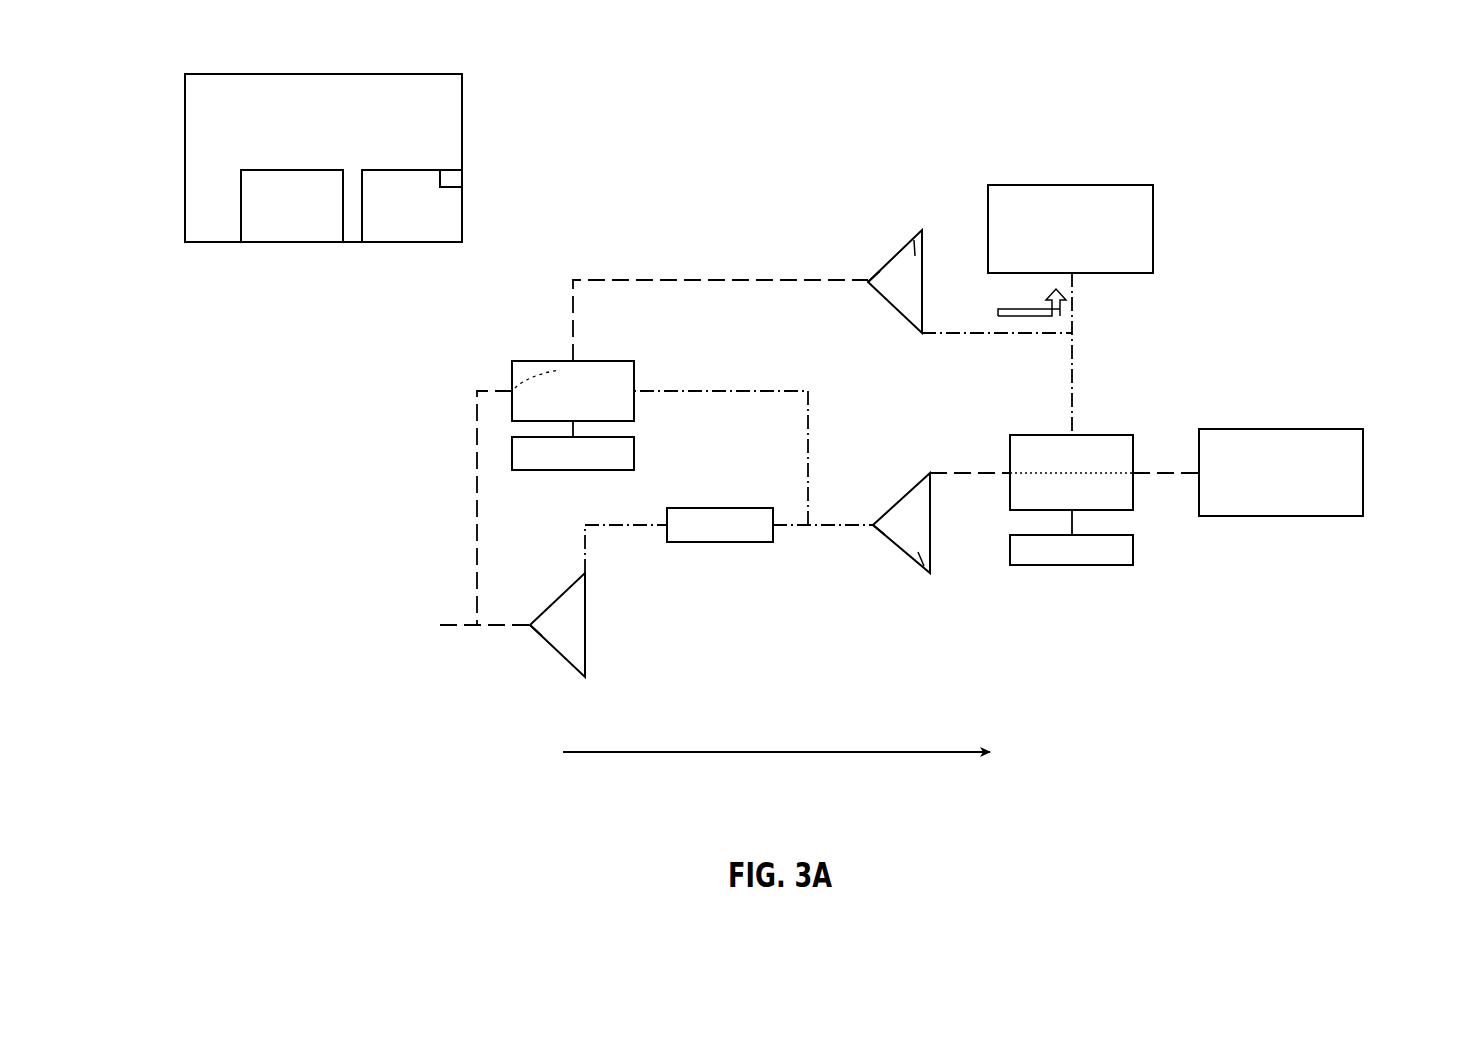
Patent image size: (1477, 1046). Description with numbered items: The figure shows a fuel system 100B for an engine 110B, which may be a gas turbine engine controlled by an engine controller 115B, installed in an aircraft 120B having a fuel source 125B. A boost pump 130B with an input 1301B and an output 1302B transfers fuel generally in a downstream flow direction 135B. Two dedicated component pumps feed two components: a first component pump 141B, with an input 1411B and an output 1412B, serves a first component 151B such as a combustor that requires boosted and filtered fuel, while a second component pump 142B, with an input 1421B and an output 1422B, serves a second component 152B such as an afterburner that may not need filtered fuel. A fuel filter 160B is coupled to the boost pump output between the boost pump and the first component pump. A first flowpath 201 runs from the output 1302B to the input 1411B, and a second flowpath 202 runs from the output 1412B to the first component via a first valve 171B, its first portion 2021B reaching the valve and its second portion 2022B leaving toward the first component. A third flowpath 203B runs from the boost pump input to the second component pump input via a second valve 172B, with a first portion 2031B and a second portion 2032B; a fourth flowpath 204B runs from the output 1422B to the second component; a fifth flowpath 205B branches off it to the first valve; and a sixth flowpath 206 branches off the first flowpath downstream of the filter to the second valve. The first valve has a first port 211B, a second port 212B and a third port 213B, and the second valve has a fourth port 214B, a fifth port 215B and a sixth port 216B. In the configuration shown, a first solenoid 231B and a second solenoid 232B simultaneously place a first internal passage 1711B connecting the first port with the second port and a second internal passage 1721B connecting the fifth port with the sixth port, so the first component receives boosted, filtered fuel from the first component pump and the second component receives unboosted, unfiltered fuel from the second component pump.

The fuel system 100B is at (1254, 74).
The engine 110B is at (408, 242).
The engine controller 115B is at (458, 180).
The aircraft 120B is at (185, 152).
The fuel source 125B is at (283, 242).
The boost pump 130B is at (573, 658).
The input of boost pump 1301B is at (532, 627).
The output of boost pump 1302B is at (585, 575).
The downstream flow direction 135B is at (732, 754).
The first component pump 141B is at (920, 567).
The input of first component pump 1411B is at (875, 527).
The output of first component pump 1412B is at (928, 473).
The second component pump 142B is at (917, 237).
The input of second component pump 1421B is at (922, 333).
The output of second component pump 1422B is at (868, 280).
The first component 151B is at (1363, 472).
The second component 152B is at (1153, 239).
The fuel filter 160B is at (758, 542).
The first valve 171B is at (1057, 435).
The first internal passage 1711B is at (1014, 470).
The second valve 172B is at (528, 361).
The second internal passage 1721B is at (573, 358).
The first flowpath 201 is at (626, 537).
The second flowpath 202 is at (1003, 572).
The third flowpath 203B is at (466, 474).
The first portion of third flowpath 2031B is at (466, 576).
The second portion of third flowpath 2032B is at (688, 272).
The fourth flowpath 204B is at (992, 328).
The fifth flowpath 205B is at (1077, 361).
The sixth flowpath 206 is at (802, 438).
The first port 211B is at (1010, 471).
The second port 212B is at (1133, 470).
The third port 213B is at (1073, 435).
The fourth port 214B is at (634, 387).
The fifth port 215B is at (512, 387).
The sixth port 216B is at (580, 361).
The first portion of second flowpath 2021B is at (952, 478).
The second portion of second flowpath 2022B is at (1155, 478).
The first solenoid 231B is at (1100, 565).
The second solenoid 232B is at (573, 470).